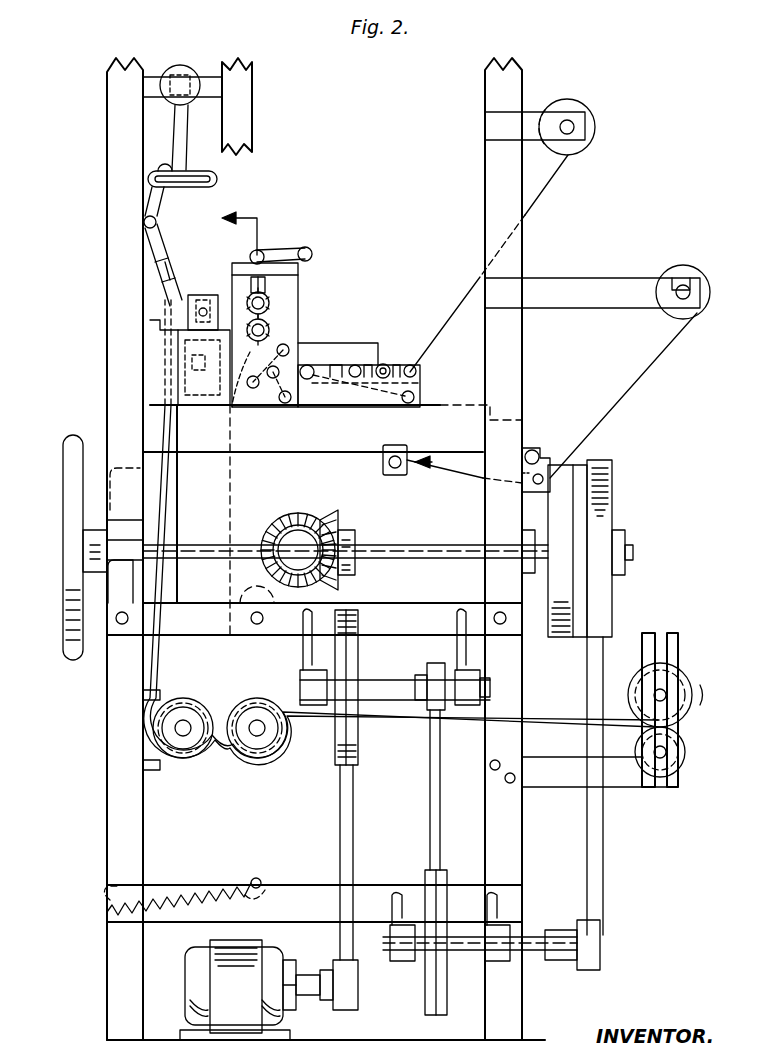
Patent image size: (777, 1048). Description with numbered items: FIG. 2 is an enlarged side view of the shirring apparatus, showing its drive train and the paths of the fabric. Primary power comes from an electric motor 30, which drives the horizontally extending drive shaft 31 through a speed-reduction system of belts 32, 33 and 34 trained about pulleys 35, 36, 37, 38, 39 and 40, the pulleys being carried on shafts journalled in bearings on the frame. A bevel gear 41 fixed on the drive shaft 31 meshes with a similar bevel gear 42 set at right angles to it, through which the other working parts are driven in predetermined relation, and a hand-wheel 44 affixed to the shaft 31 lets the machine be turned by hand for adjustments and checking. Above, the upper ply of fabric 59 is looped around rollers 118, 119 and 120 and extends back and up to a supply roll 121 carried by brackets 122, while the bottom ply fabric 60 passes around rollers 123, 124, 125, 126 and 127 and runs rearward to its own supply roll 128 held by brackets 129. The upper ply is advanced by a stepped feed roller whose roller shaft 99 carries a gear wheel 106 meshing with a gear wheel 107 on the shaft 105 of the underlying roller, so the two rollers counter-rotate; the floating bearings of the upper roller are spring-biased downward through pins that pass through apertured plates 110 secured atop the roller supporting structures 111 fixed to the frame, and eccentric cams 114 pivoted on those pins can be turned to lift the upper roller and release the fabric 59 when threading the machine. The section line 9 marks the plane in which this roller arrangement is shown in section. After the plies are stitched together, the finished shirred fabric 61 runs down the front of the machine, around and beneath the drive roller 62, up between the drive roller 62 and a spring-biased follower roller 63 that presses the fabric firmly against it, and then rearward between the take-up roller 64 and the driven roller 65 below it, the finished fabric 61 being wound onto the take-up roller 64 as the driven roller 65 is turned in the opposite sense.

The section line 9 is at (341, 344).
The electric motor 30 is at (190, 987).
The drive shaft 31 is at (433, 548).
The belt 32 is at (353, 808).
The belt 33 is at (430, 835).
The belt 34 is at (603, 835).
The pulley 35 is at (358, 998).
The pulley 36 is at (358, 740).
The pulley 37 is at (436, 662).
The pulley 38 is at (440, 997).
The pulley 39 is at (600, 930).
The pulley 40 is at (612, 488).
The bevel gear 41 is at (346, 538).
The bevel gear 42 is at (296, 516).
The hand-wheel 44 is at (72, 470).
The upper ply of fabric 59 is at (462, 302).
The bottom ply fabric 60 is at (612, 408).
The finished shirred fabric 61 is at (157, 660).
The drive roller 62 is at (178, 756).
The follower roller 63 is at (283, 745).
The take-up roller 64 is at (662, 684).
The driven roller 65 is at (686, 750).
The roller shaft 99 is at (270, 300).
The shaft 105 is at (232, 315).
The gear wheel 106 is at (270, 303).
The gear wheel 107 is at (270, 328).
The apertured plate 110 is at (288, 270).
The roller supporting structure 111 is at (240, 398).
The cam 114 is at (310, 250).
The roller 118 is at (358, 364).
The roller 119 is at (386, 364).
The roller 120 is at (410, 364).
The supply roll 121 is at (575, 108).
The bracket 122 is at (535, 118).
The roller 123 is at (285, 403).
The roller 124 is at (315, 380).
The roller 125 is at (402, 402).
The roller 126 is at (403, 458).
The roller 127 is at (545, 450).
The supply roll 128 is at (685, 276).
The bracket 129 is at (592, 276).